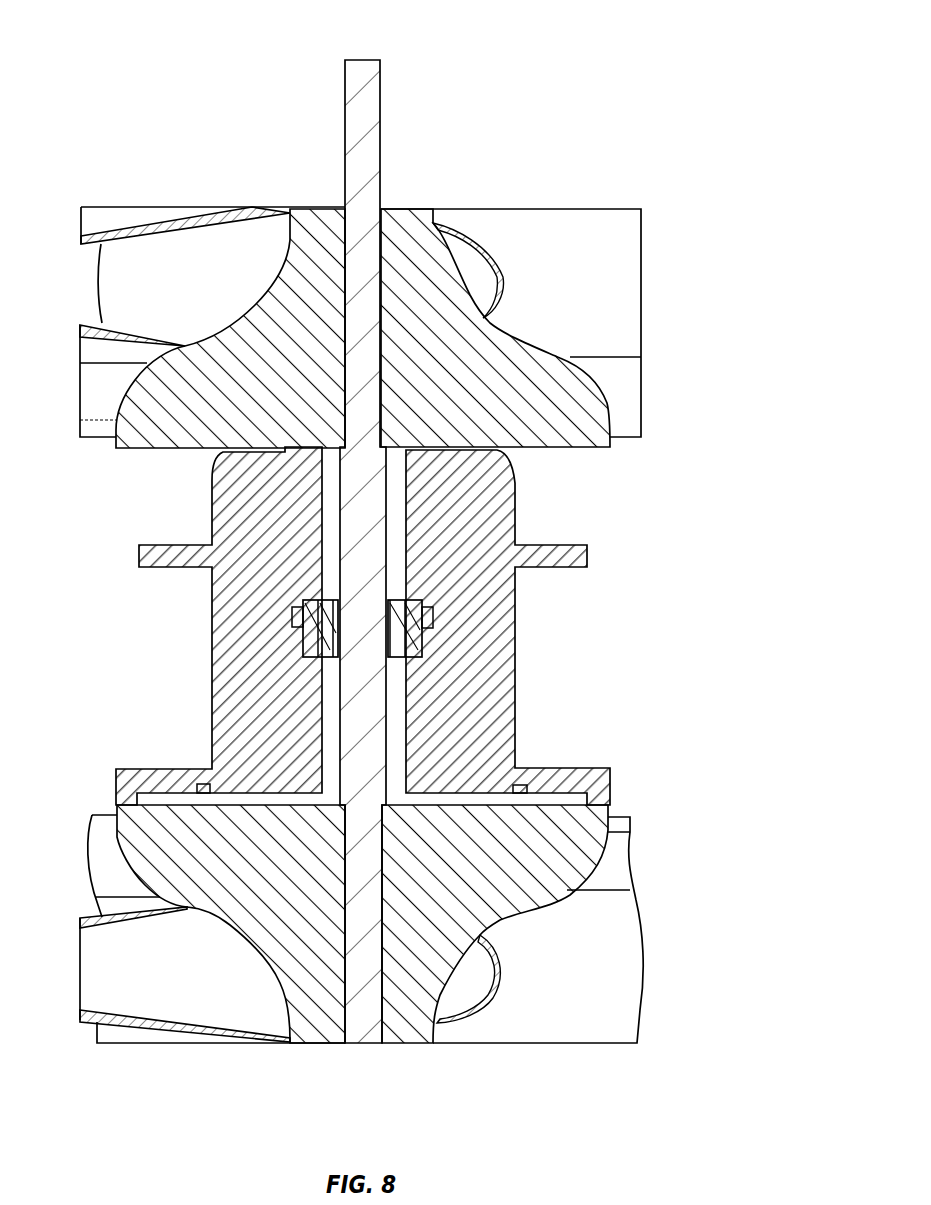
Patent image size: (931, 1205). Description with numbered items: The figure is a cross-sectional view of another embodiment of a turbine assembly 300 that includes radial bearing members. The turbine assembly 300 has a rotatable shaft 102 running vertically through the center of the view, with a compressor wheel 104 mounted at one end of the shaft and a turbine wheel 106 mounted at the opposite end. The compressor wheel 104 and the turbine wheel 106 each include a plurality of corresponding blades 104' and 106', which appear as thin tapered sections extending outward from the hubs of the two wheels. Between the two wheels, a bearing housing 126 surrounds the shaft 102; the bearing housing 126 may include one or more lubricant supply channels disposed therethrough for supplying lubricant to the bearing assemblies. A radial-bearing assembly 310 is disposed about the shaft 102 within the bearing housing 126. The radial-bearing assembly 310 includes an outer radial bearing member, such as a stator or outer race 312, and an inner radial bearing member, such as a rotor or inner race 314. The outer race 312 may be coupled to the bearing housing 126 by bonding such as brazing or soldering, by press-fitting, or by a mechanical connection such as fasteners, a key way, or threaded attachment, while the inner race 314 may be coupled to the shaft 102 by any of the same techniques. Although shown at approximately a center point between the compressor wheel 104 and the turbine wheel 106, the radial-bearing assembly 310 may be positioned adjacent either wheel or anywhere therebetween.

The turbine assembly 300 is at (673, 78).
The rotatable shaft 102 is at (367, 100).
The compressor wheel 104 is at (345, 292).
The blades 104' is at (568, 323).
The turbine wheel 106 is at (437, 924).
The blades 106' is at (589, 930).
The bearing housing 126 is at (490, 603).
The radial-bearing assembly 310 is at (298, 640).
The outer race 312 is at (307, 597).
The inner race 314 is at (316, 598).